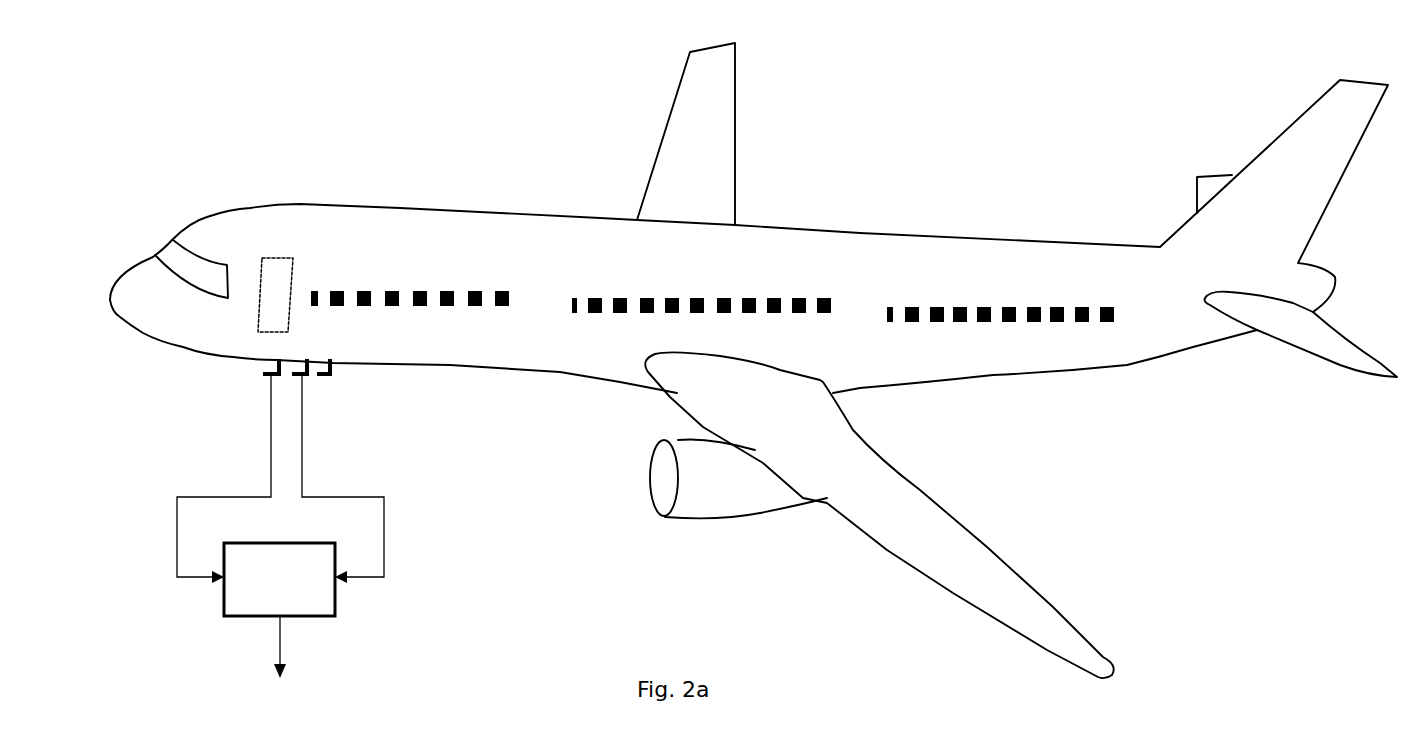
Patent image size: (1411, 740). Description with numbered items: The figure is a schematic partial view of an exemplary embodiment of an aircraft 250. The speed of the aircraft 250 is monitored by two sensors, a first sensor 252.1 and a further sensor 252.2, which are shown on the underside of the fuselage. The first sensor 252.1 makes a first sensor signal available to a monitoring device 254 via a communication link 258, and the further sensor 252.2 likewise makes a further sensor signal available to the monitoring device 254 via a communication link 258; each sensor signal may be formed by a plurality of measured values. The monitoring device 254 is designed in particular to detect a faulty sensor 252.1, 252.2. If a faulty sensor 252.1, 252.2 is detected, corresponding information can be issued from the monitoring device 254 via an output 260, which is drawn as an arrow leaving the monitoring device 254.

The aircraft 250 is at (760, 210).
The first sensor 252.1 is at (257, 380).
The further sensor 252.2 is at (308, 380).
The monitoring device 254 is at (279, 579).
The communication link 258 is at (171, 530).
The output 260 is at (286, 634).